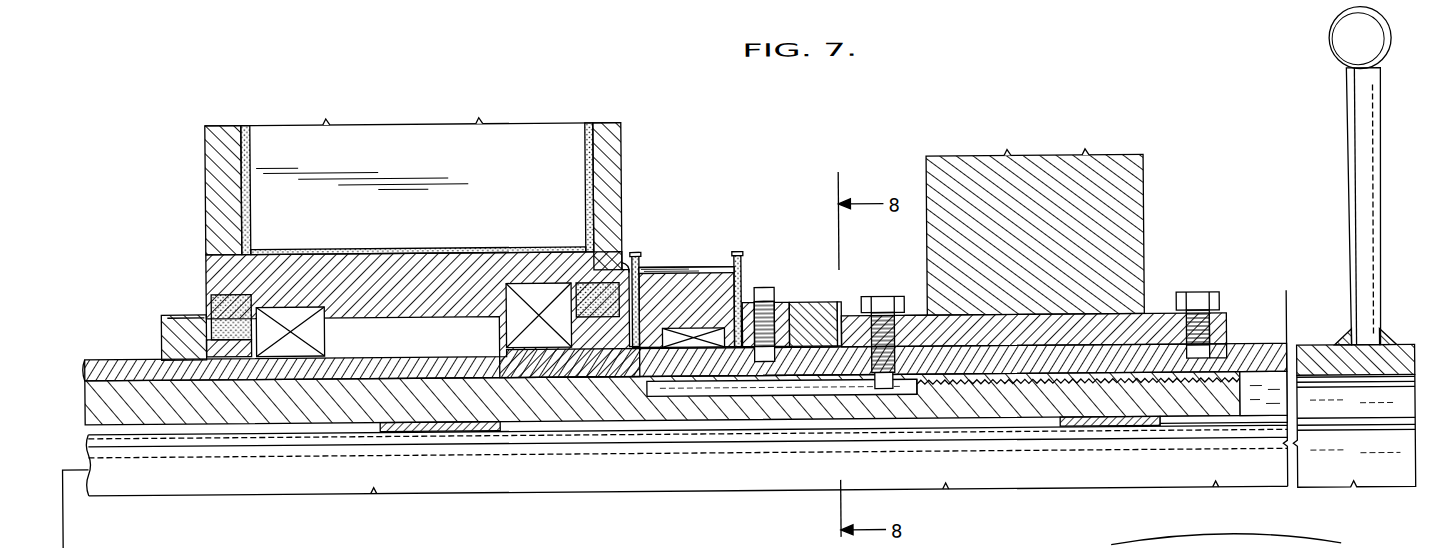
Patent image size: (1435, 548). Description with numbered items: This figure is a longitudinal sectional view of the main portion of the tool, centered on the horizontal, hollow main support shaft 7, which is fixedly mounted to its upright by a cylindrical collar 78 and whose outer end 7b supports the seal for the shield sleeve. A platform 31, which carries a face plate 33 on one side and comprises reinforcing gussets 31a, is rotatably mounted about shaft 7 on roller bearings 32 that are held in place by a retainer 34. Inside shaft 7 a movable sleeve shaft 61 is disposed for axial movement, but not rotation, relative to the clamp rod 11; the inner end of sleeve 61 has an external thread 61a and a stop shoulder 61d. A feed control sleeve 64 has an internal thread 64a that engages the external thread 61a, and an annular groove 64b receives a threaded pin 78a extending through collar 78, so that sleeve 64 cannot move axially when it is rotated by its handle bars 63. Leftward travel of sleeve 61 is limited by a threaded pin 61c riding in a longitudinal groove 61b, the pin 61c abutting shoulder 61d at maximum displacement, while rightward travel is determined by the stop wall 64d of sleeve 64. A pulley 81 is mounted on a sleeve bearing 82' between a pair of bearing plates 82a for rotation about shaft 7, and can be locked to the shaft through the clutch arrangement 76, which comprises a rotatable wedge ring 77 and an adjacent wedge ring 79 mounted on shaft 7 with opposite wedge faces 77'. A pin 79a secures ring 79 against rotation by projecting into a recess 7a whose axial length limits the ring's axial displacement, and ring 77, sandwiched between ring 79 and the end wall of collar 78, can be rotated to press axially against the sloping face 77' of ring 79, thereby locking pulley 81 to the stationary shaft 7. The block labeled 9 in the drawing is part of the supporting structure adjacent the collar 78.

The main support shaft 7 is at (607, 364).
The recess 7a is at (772, 352).
The outer end of hollow shaft 7b is at (120, 356).
The block 9 is at (1147, 186).
The clamp rod 11 is at (487, 478).
The platform 31 is at (210, 121).
The reinforcing gussets 31a is at (471, 161).
The roller bearings 32 is at (326, 330).
The face plate 33 is at (206, 170).
The retainer 34 is at (165, 332).
The movable sleeve shaft 61 is at (210, 415).
The external thread 61a is at (1040, 405).
The longitudinal groove 61b is at (800, 390).
The threaded pin 61c is at (882, 392).
The stop shoulder 61d is at (920, 388).
The handle bars 63 is at (1350, 151).
The feed control sleeve 64 is at (1300, 352).
The internal thread 64a is at (1262, 395).
The annular groove 64b is at (1212, 357).
The stop wall 64d is at (1110, 424).
The clutch arrangement 76 is at (820, 303).
The rotatable wedge ring 77 is at (1034, 302).
The wedge faces 77' is at (807, 412).
The cylindrical collar 78 is at (920, 315).
The threaded pin 78a is at (1205, 300).
The wedge ring 79 is at (784, 303).
The pin 79a is at (765, 288).
The pulley 81 is at (690, 266).
The sleeve bearing 82' is at (693, 403).
The bearing plates 82a is at (598, 262).